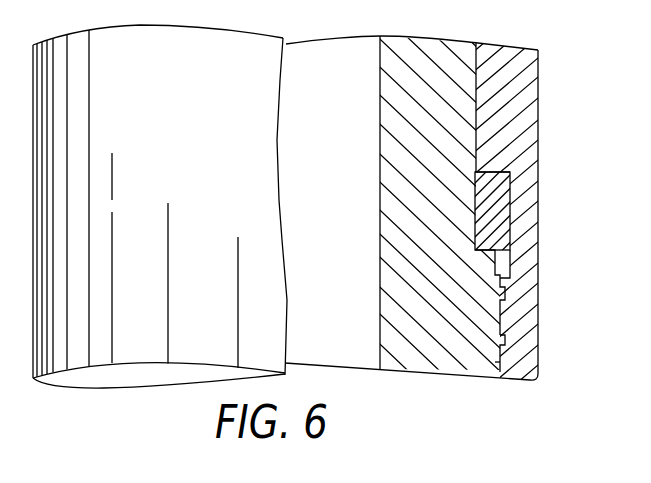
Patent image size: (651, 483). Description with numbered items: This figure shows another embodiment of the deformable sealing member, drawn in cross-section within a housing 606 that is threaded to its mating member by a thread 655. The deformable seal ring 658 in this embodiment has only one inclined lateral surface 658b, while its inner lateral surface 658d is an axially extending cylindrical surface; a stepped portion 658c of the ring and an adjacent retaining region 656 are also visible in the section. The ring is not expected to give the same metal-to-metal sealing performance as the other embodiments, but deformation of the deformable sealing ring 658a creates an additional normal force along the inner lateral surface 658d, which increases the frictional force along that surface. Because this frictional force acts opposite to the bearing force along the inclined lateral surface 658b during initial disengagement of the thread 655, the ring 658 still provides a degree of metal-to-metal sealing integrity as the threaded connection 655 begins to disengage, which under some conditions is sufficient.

The housing 606 is at (522, 116).
The deformable seal ring 658 is at (505, 213).
The deformable sealing ring 658a is at (512, 153).
The inclined lateral surface 658b is at (512, 197).
The seal stepped portion 658c is at (503, 256).
The inner lateral surface 658d is at (475, 202).
The retaining member 656 is at (478, 318).
The thread 655 is at (493, 339).